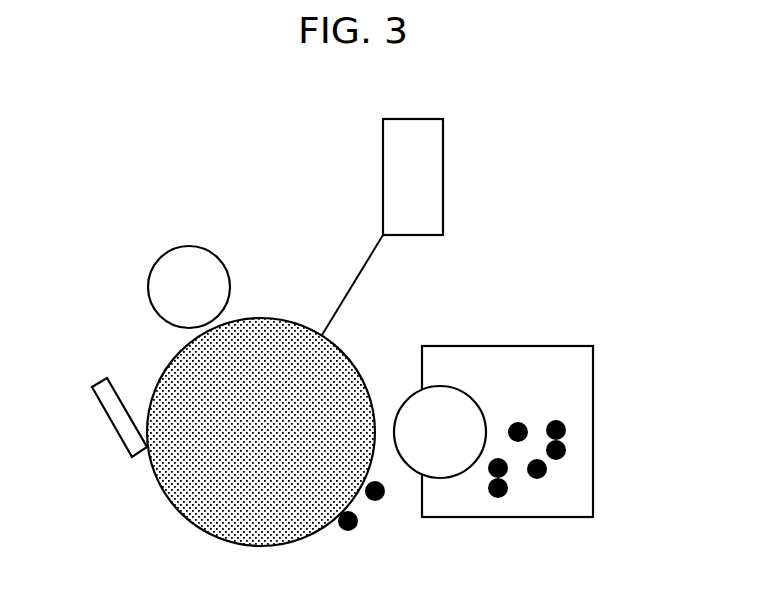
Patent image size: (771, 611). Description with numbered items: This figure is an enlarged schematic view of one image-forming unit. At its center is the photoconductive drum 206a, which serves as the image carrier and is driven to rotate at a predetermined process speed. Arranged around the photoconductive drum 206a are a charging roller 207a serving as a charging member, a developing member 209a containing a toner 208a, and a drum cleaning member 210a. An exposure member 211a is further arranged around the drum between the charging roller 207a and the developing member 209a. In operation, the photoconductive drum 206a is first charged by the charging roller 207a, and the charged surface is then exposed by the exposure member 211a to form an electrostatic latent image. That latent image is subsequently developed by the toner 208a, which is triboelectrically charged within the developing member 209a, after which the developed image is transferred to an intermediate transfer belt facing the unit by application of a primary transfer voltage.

The photoconductive drum 206a is at (165, 497).
The charging roller 207a is at (148, 287).
The toner 208a is at (566, 440).
The developing member 209a is at (593, 368).
The drum cleaning member 210a is at (110, 420).
The exposure member 211a is at (443, 178).